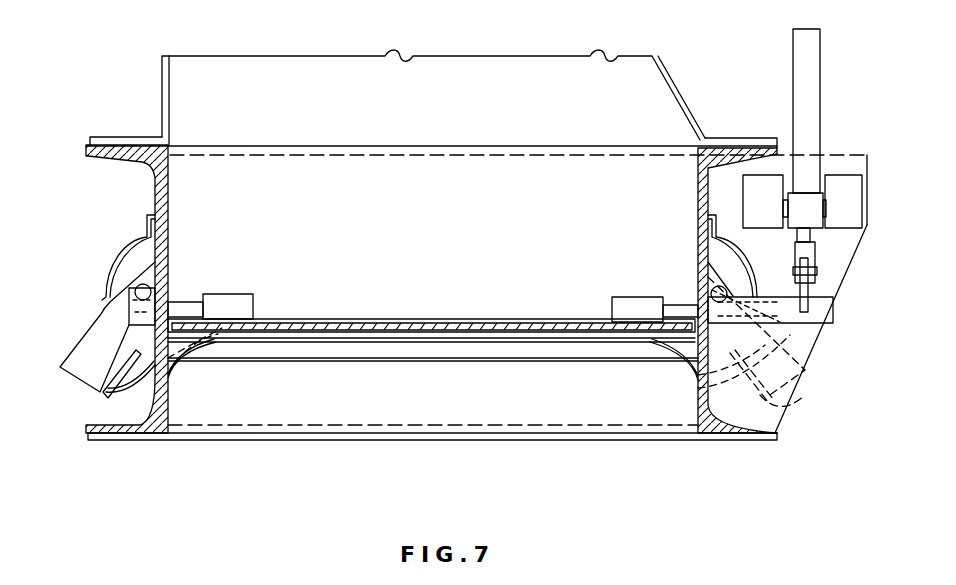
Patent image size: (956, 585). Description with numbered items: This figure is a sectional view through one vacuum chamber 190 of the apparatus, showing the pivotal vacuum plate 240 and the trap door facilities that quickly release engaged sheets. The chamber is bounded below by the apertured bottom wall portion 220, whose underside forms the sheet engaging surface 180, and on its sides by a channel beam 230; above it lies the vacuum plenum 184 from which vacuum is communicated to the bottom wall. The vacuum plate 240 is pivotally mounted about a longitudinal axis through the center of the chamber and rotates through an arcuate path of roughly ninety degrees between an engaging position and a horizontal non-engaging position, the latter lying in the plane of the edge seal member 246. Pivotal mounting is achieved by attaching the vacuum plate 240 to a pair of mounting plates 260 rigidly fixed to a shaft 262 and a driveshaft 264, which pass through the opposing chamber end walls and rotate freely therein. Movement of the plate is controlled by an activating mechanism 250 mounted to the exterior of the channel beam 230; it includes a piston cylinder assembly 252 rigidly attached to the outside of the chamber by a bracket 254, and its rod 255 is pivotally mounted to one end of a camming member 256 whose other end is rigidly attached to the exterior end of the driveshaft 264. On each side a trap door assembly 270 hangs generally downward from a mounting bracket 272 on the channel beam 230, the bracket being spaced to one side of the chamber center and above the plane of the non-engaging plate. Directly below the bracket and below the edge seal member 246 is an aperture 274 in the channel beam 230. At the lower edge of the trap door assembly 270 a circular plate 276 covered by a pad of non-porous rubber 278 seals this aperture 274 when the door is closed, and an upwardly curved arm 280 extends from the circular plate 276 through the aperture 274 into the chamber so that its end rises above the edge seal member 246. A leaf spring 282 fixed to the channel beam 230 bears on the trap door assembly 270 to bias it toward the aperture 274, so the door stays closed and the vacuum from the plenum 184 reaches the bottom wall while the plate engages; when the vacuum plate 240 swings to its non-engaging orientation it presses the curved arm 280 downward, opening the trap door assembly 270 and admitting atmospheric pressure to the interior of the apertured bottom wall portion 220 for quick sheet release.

The sheet engaging surface 180 is at (343, 436).
The vacuum plenum 184 is at (355, 112).
The vacuum chamber 190 is at (458, 170).
The apertured bottom wall portion 220 is at (270, 418).
The channel beam 230 is at (703, 192).
The vacuum plate 240 is at (438, 326).
The edge seal member 246 is at (507, 352).
The activating mechanism 250 is at (820, 170).
The piston cylinder assembly 252 is at (815, 222).
The bracket 254 is at (760, 187).
The rod 255 is at (813, 250).
The camming member 256 is at (806, 290).
The mounting plates 260 is at (220, 297).
The shaft 262 is at (193, 303).
The driveshaft 264 is at (676, 305).
The trap door assembly 270 is at (76, 308).
The mounting bracket 272 is at (157, 258).
The aperture 274 is at (168, 382).
The circular plate 276 is at (103, 393).
The pad of non-porous rubber 278 is at (110, 403).
The curved arm 280 is at (198, 362).
The spring 282 is at (137, 238).